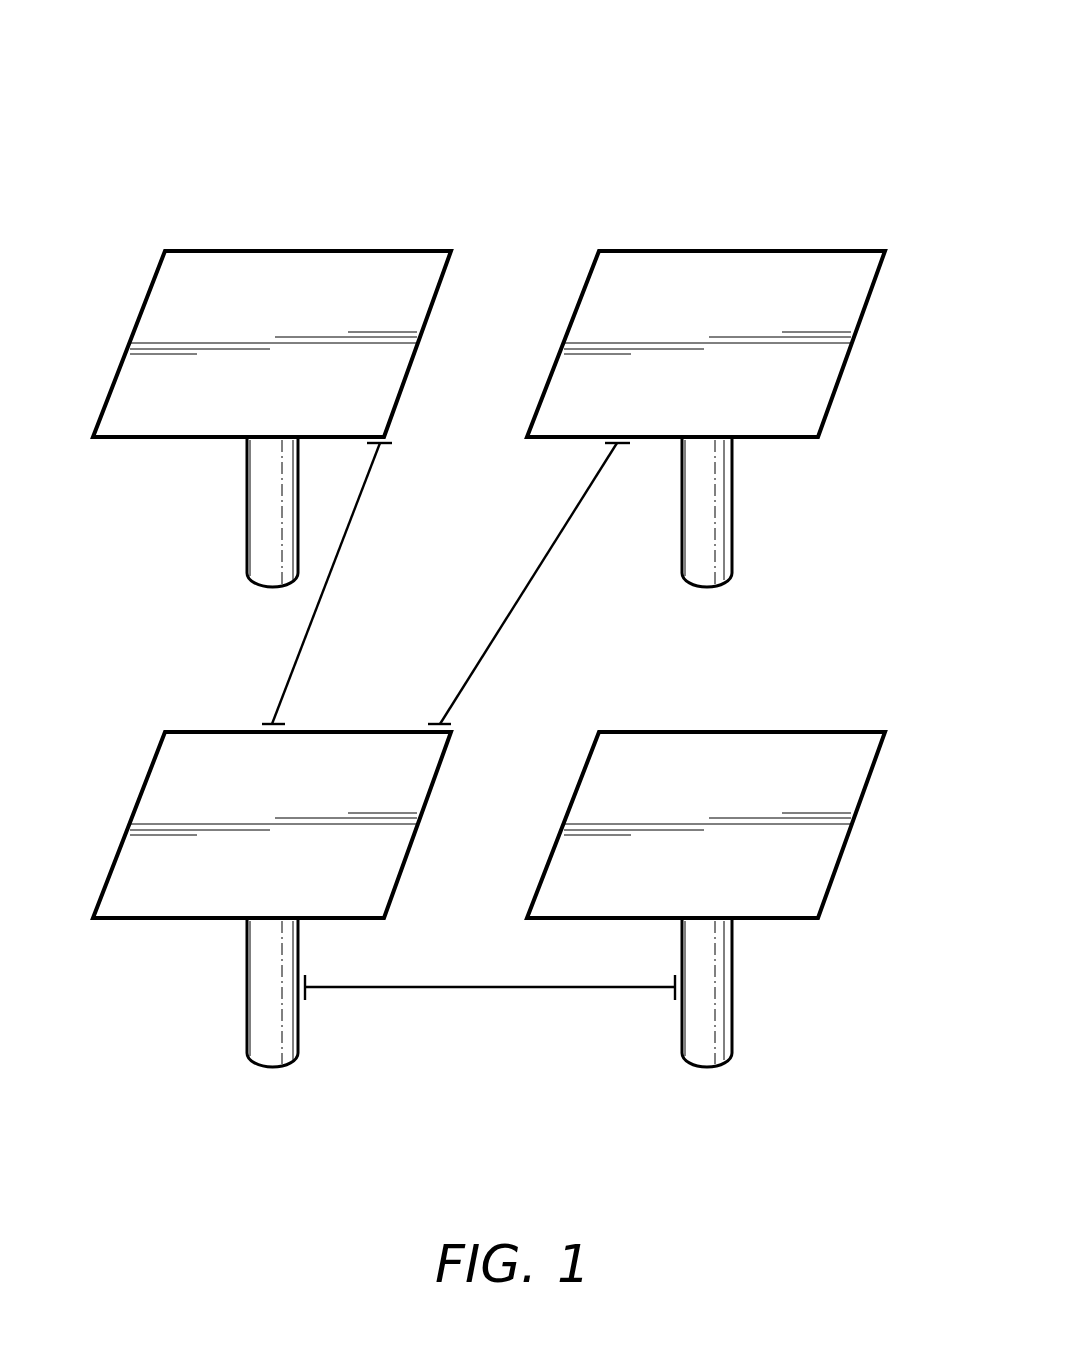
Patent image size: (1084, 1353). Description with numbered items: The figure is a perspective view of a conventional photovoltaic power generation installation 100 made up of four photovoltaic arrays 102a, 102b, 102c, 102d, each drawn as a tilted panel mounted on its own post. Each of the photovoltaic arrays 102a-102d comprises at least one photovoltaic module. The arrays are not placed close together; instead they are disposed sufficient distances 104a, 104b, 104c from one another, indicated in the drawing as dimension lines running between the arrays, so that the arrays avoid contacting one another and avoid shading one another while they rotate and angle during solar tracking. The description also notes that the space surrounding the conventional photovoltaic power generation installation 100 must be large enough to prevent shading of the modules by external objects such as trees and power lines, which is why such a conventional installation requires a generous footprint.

The conventional photovoltaic power generation installation 100 is at (840, 104).
The photovoltaic array 102a is at (373, 243).
The photovoltaic array 102b is at (272, 874).
The photovoltaic array 102c is at (706, 874).
The photovoltaic array 102d is at (724, 393).
The distance 104a is at (327, 585).
The distance 104b is at (530, 582).
The distance 104c is at (488, 988).